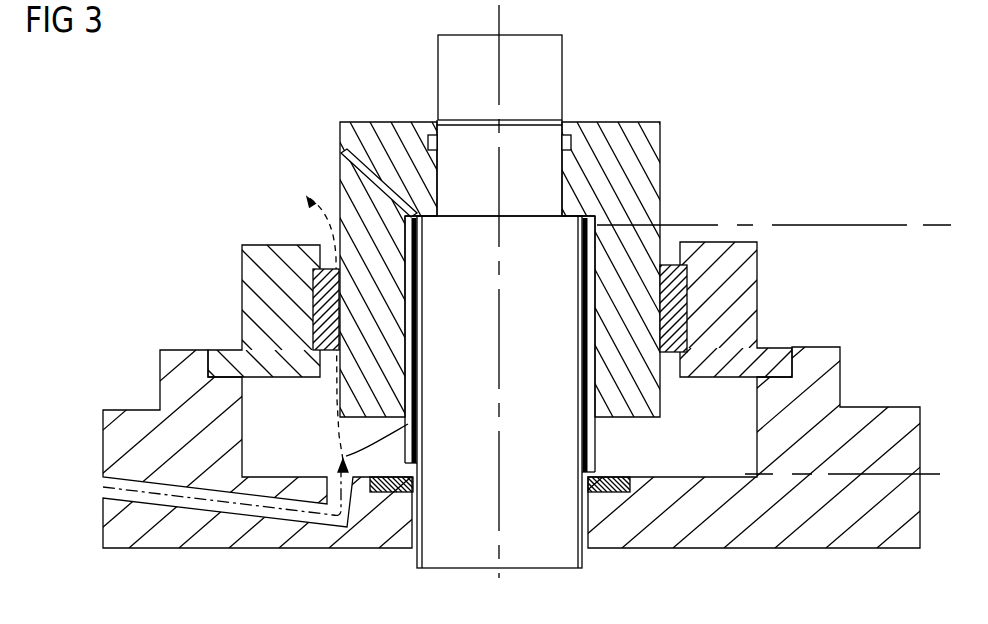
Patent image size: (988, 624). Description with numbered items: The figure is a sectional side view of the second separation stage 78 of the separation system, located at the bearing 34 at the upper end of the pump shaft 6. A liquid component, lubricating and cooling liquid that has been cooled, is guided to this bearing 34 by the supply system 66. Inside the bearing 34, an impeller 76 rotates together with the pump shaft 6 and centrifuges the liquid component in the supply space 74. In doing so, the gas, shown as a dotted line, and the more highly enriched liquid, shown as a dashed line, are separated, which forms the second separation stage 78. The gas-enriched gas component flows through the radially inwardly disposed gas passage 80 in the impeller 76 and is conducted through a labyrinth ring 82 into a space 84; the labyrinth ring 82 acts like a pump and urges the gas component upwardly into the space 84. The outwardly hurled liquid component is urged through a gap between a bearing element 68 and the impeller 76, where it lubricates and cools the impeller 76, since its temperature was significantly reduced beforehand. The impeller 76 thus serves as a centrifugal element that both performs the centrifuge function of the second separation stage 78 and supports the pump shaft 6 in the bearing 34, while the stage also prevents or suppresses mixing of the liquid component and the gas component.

The pump shaft 6 is at (542, 77).
The bearing 34 is at (745, 139).
The supply system 66 is at (133, 478).
The bearing element 68 is at (675, 297).
The supply space 74 is at (260, 410).
The impeller 76 is at (640, 153).
The second separation stage 78 is at (289, 226).
The gas passage 80 is at (420, 332).
The labyrinth ring 82 is at (597, 233).
The space 84 is at (339, 151).